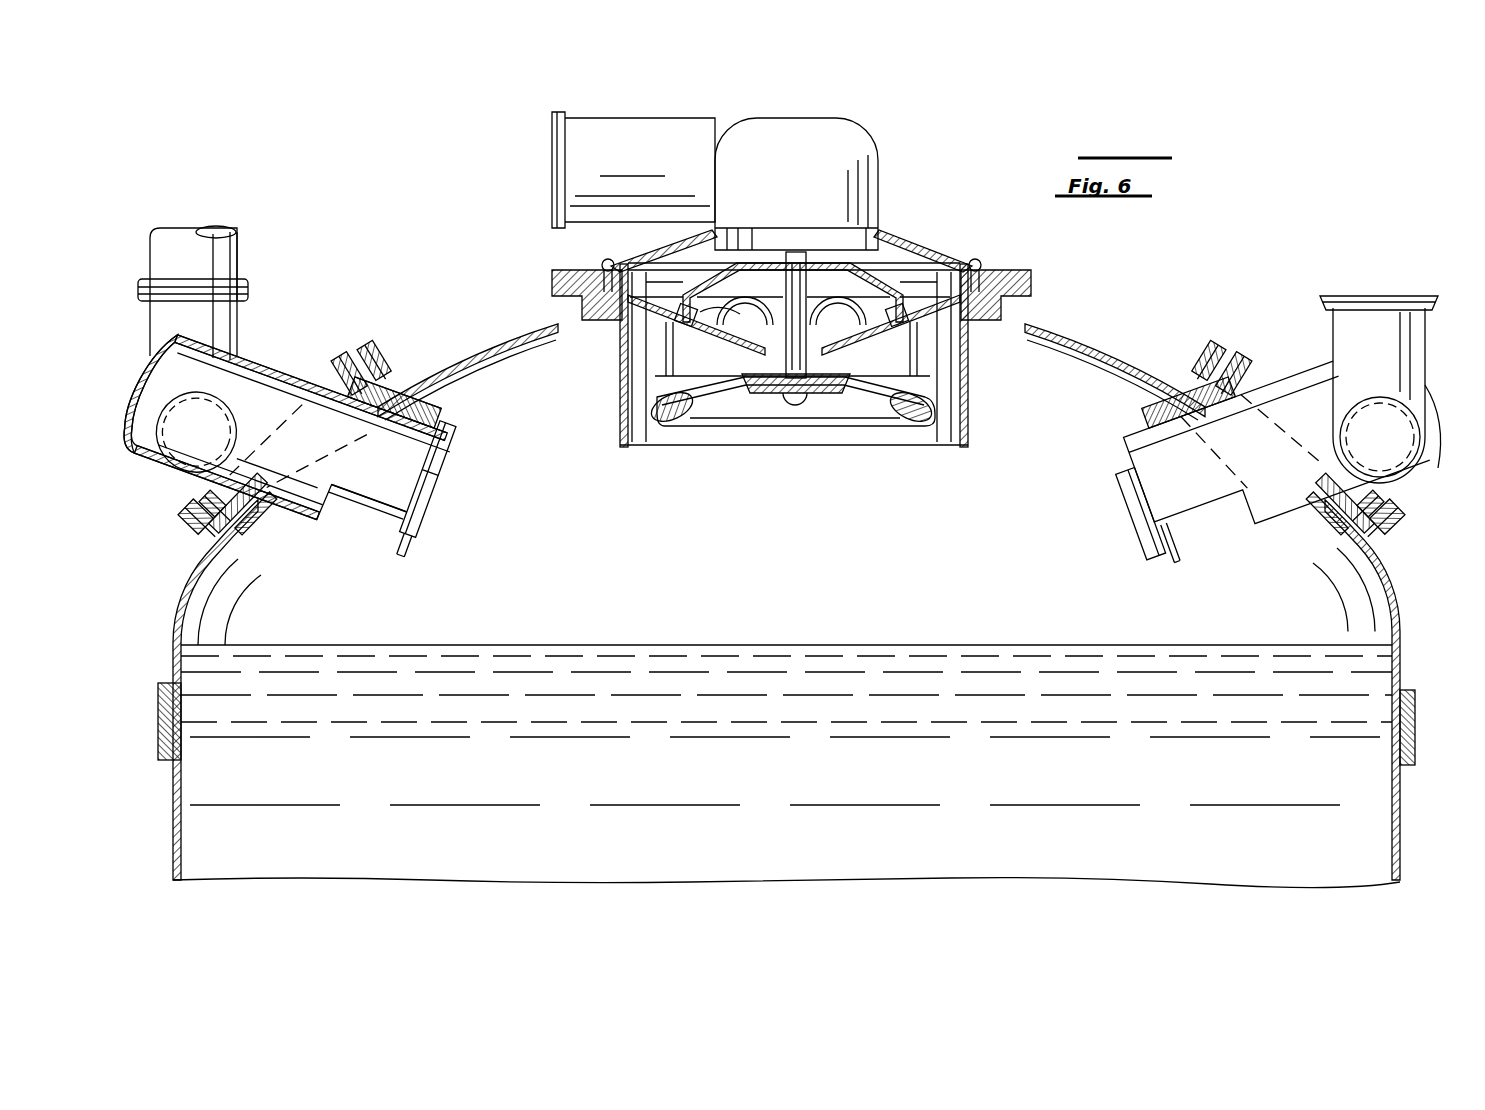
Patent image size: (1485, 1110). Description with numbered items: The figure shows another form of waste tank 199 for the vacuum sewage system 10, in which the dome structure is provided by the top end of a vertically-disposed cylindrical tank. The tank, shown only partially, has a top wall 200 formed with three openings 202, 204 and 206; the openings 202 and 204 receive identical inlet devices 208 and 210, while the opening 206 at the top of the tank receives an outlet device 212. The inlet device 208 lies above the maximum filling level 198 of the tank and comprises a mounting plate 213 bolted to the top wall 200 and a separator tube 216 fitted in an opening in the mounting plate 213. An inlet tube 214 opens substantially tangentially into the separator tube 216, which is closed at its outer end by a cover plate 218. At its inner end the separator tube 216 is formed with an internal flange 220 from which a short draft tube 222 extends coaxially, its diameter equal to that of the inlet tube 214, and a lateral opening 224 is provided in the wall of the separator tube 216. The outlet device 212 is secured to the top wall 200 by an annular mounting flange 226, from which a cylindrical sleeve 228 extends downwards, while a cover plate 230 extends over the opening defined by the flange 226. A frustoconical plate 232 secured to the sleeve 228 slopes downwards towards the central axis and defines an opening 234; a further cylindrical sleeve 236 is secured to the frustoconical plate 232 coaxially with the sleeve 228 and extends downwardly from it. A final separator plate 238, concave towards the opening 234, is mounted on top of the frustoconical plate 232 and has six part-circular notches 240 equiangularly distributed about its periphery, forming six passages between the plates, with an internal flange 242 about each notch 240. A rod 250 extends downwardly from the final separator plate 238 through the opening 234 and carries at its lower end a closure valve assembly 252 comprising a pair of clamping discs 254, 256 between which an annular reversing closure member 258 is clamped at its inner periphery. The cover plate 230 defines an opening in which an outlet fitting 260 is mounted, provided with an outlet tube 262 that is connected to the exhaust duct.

The pipe wall 10 is at (238, 244).
The maximum filling level 198 is at (920, 645).
The tank 199 is at (1400, 816).
The top wall 200 is at (497, 337).
The opening 202 is at (284, 535).
The opening 204 is at (1313, 533).
The opening 206 is at (599, 318).
The inlet device 208 is at (293, 441).
The inlet device 210 is at (1285, 362).
The outlet device 212 is at (810, 356).
The mounting plate 213 is at (352, 350).
The inlet tube 214 is at (150, 326).
The separator tube 216 is at (427, 423).
The cover plate 218 is at (142, 428).
The internal flange 220 is at (444, 438).
The draft tube 222 is at (422, 530).
The lateral opening 224 is at (357, 508).
The annular mounting flange 226 is at (1017, 280).
The cylindrical sleeve 228 is at (970, 400).
The cover plate 230 is at (920, 260).
The frustoconical plate 232 is at (943, 313).
The opening 234 is at (830, 353).
The further cylindrical sleeve 236 is at (927, 355).
The final separator plate 238 is at (867, 263).
The part-circular notches 240 is at (743, 330).
The internal flange 242 is at (708, 292).
The rod 250 is at (804, 281).
The closure valve assembly 252 is at (791, 455).
The clamping disc 254 is at (847, 382).
The clamping disc 256 is at (781, 382).
The annular reversing closure member 258 is at (665, 420).
The outlet fitting 260 is at (860, 148).
The outlet tube 262 is at (649, 130).